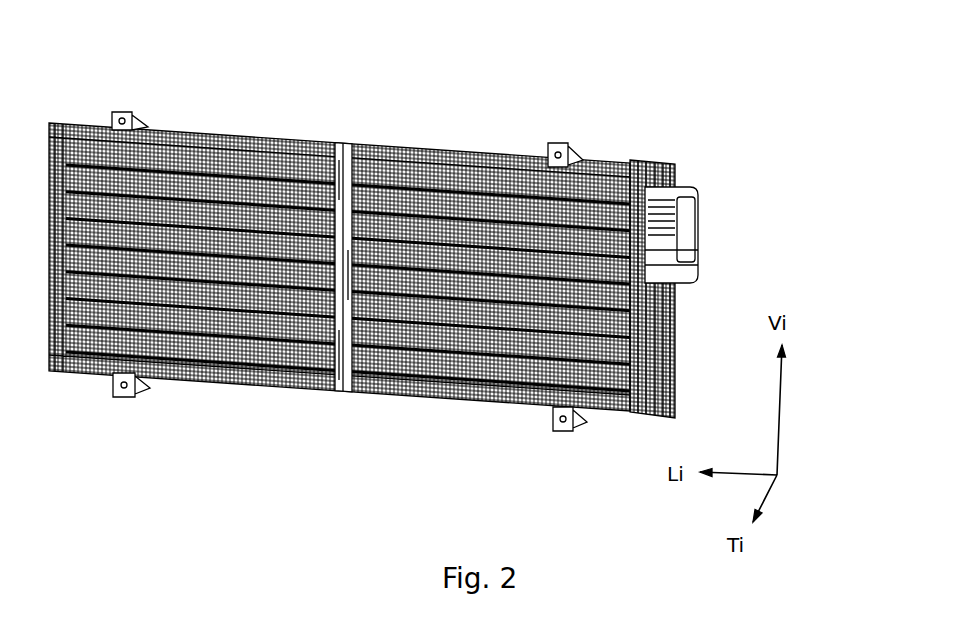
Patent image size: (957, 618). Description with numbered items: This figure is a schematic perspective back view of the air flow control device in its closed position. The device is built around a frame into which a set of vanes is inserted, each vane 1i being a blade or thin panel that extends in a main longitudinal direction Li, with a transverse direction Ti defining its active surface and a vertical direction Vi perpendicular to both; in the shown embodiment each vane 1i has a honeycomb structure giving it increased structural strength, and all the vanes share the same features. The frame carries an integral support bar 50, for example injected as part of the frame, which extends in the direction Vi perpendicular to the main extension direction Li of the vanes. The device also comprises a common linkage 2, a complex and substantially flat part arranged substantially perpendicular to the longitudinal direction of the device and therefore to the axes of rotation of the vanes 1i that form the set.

The vane 1i is at (322, 244).
The integral support bar 50 is at (336, 185).
The common linkage 2 is at (635, 373).